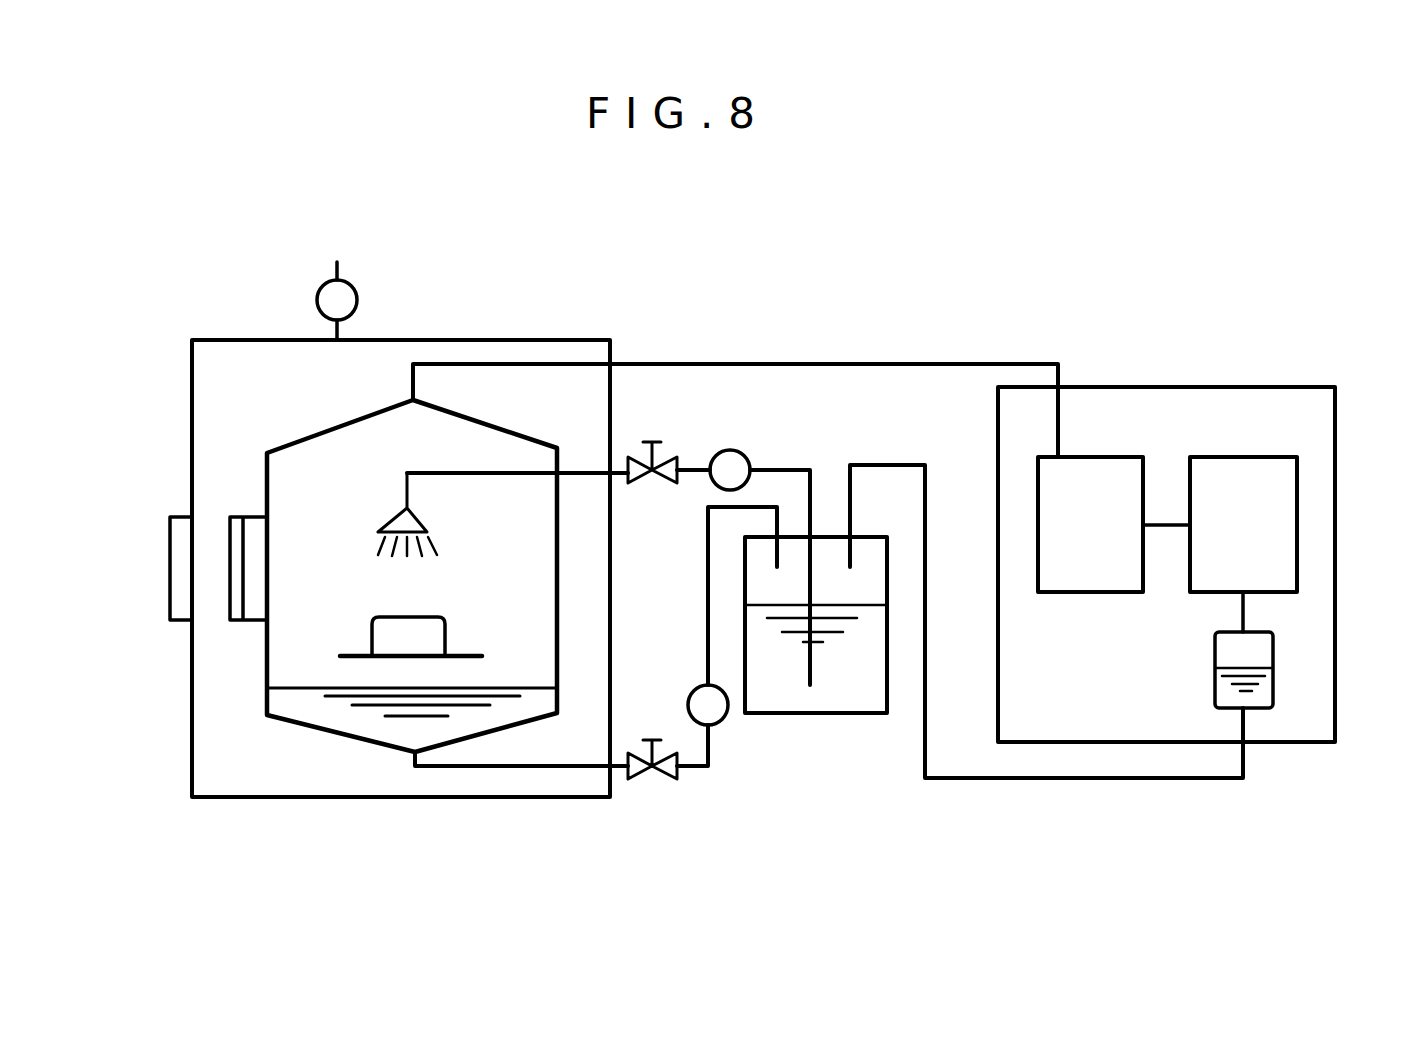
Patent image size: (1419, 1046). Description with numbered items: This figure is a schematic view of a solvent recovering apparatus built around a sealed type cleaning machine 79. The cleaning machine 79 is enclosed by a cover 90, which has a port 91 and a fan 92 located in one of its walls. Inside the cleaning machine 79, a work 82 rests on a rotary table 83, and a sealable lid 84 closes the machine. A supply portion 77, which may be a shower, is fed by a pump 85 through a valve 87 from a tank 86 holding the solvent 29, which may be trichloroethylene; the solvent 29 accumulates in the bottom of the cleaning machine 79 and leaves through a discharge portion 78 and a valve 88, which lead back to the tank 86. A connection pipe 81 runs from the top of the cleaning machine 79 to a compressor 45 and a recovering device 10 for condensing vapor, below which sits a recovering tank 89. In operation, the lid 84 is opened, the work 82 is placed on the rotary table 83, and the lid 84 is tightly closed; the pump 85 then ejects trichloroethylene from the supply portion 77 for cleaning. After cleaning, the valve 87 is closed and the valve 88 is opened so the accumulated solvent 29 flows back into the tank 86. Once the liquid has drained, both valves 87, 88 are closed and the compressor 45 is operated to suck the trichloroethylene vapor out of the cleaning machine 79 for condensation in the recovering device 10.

The recovering device 10 is at (1215, 457).
The solvent 29 is at (382, 728).
The compressor 45 is at (1095, 457).
The supply portion 77 is at (400, 520).
The discharge portion 78 is at (472, 770).
The cleaning machine 79 is at (302, 728).
The connection pipe 81 is at (805, 362).
The work 82 is at (447, 652).
The rotary table 83 is at (340, 656).
The lid 84 is at (232, 517).
The pump 85 is at (745, 455).
The tank 86 is at (840, 715).
The valve 87 is at (645, 438).
The valve 88 is at (657, 775).
The recovering tank 89 is at (1275, 683).
The cover 90 is at (192, 360).
The port 91 is at (170, 550).
The fan 92 is at (357, 293).